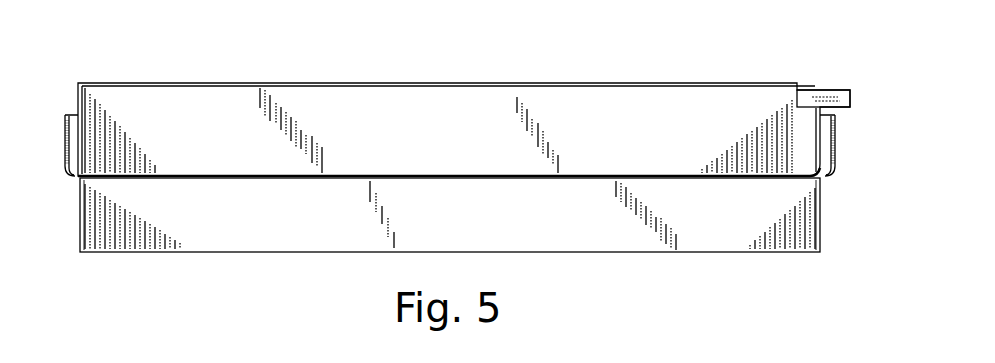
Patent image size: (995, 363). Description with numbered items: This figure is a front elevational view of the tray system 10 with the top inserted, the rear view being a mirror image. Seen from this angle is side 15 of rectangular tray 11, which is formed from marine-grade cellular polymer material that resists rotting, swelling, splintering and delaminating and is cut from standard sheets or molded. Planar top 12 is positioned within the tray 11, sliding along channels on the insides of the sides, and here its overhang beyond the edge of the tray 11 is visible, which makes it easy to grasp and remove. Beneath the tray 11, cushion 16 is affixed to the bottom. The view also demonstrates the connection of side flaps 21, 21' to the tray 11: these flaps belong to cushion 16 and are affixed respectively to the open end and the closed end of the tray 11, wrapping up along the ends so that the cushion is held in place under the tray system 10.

The tray system 10 is at (690, 49).
The rectangular tray 11 is at (76, 93).
The planar top 12 is at (829, 91).
The side 15 is at (462, 137).
The cushion 16 is at (75, 222).
The side flap 21 is at (838, 162).
The side flap 21' is at (64, 162).